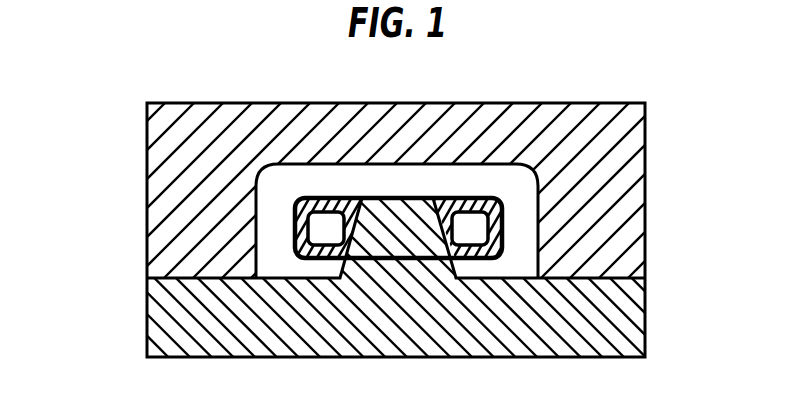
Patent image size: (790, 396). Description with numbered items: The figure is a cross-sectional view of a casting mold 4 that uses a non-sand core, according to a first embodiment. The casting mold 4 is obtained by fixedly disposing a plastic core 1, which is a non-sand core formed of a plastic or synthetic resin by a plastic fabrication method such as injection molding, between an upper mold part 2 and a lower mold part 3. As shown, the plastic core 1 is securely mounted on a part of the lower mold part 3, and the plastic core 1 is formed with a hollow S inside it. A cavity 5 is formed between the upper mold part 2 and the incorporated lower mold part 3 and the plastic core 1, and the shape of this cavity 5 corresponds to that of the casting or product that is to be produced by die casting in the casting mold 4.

The plastic core 1 is at (471, 197).
The upper mold part 2 is at (620, 172).
The lower mold part 3 is at (628, 300).
The casting mold 4 is at (124, 201).
The cavity 5 is at (373, 178).
The hollow S is at (477, 223).